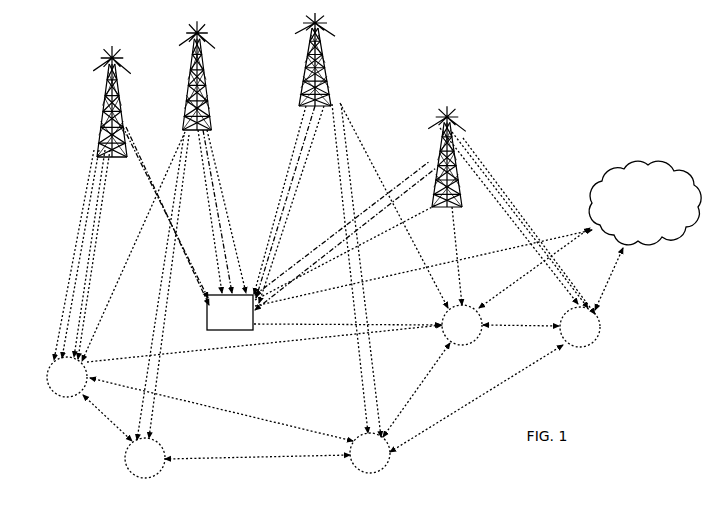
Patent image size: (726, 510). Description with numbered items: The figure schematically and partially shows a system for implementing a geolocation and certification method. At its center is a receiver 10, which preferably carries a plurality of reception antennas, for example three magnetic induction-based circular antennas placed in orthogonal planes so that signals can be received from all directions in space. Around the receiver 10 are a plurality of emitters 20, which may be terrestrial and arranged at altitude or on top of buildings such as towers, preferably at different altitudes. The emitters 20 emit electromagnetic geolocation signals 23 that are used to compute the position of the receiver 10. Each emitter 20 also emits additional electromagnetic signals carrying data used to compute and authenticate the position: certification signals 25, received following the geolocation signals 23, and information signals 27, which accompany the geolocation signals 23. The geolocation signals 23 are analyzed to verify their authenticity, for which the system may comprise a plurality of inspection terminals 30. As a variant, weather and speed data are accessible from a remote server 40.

The receiver 10 is at (244, 291).
The emitters 20 is at (97, 125).
The geolocation signals 23 is at (140, 161).
The certification signals 25 is at (148, 196).
The information signals 27 is at (212, 148).
The inspection terminals 30 is at (50, 364).
The remote server 40 is at (618, 165).